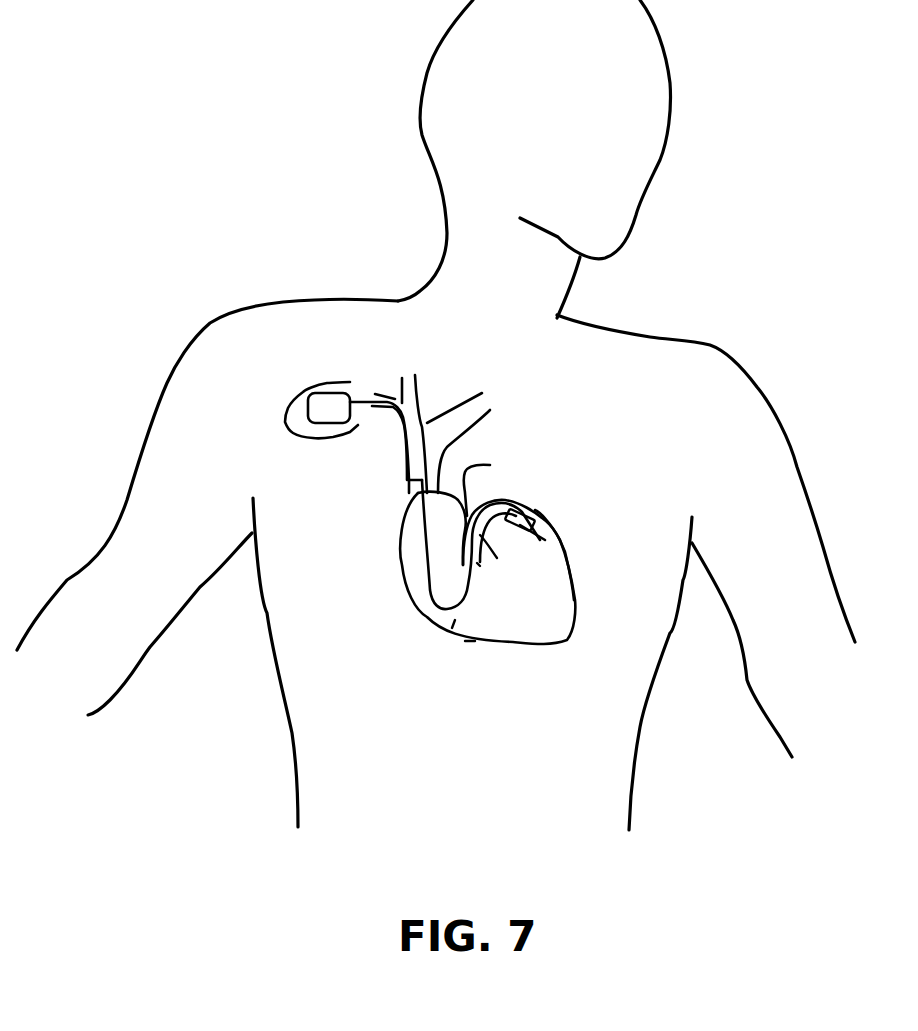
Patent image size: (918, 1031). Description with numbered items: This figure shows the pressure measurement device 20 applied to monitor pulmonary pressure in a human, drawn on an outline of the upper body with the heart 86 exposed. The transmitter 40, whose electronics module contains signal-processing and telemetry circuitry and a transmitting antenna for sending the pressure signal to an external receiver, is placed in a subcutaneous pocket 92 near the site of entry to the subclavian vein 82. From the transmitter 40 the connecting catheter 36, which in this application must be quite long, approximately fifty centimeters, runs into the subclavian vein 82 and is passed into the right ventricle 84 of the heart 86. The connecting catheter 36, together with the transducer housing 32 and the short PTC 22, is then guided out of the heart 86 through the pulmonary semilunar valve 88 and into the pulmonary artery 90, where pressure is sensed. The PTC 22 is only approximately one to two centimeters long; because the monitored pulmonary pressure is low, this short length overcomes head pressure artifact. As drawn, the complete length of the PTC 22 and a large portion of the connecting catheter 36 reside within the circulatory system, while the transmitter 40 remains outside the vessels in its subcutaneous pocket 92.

The pressure measurement device 20 is at (507, 468).
The PTC 22 is at (537, 538).
The transducer housing 32 is at (523, 508).
The connecting catheter 36 is at (410, 485).
The transmitter 40 is at (330, 423).
The subclavian vein 82 is at (407, 468).
The right ventricle 84 is at (452, 628).
The heart 86 is at (470, 640).
The pulmonary semilunar valve 88 is at (477, 563).
The pulmonary artery 90 is at (500, 560).
The subcutaneous pocket 92 is at (318, 383).